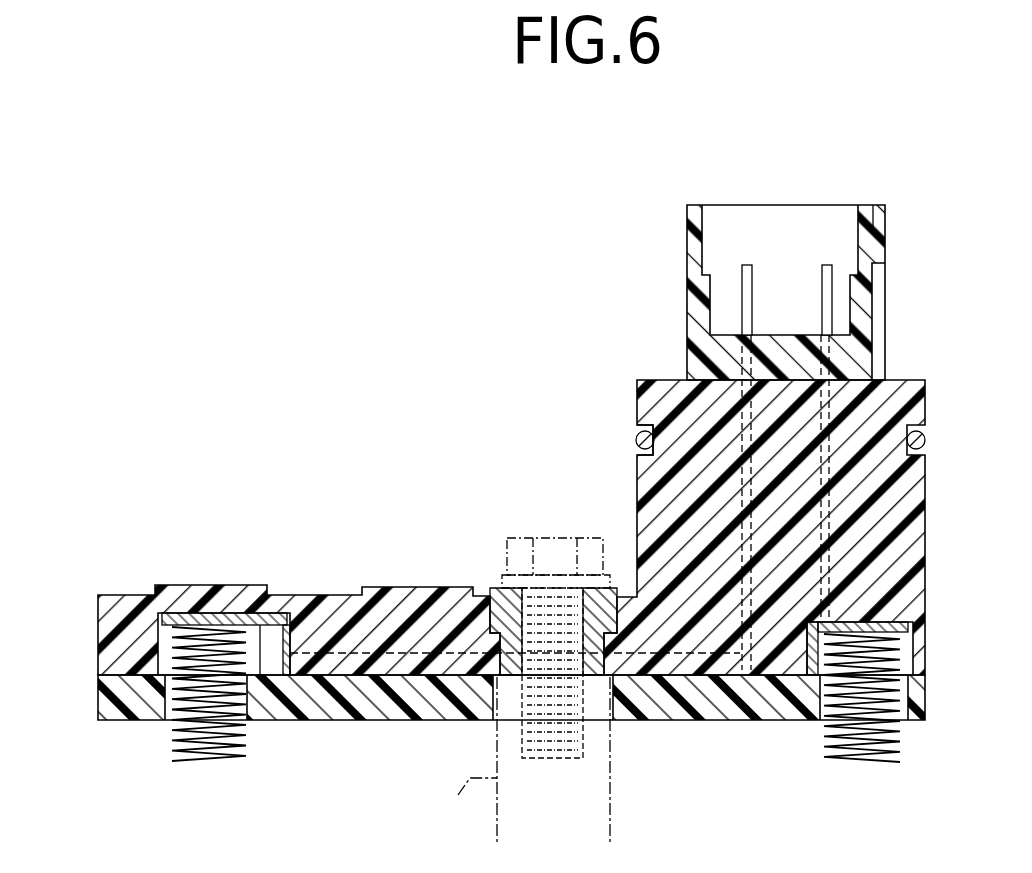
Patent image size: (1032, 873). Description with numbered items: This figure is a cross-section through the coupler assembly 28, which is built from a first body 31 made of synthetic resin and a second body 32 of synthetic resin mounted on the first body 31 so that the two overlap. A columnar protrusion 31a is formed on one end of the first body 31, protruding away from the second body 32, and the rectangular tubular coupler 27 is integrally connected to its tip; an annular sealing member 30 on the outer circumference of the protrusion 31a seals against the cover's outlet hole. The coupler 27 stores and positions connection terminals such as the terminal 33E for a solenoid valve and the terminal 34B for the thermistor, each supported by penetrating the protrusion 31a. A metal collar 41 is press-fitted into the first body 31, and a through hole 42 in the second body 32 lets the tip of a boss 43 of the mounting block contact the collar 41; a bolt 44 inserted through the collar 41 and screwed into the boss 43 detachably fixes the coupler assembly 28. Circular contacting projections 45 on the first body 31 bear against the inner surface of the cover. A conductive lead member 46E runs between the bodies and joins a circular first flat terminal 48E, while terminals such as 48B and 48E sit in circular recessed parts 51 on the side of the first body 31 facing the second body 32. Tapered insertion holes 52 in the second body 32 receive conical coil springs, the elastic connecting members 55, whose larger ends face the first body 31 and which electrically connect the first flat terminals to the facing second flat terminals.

The coupler 27 is at (695, 315).
The coupler assembly 28 is at (922, 565).
The annular sealing member 30 is at (921, 443).
The first body 31 is at (324, 616).
The protrusion 31a is at (645, 477).
The second body 32 is at (367, 700).
The connection terminal 33E is at (827, 265).
The connection terminal 34B is at (747, 265).
The collar 41 is at (500, 596).
The through hole 42 is at (598, 695).
The boss 43 is at (515, 761).
The bolt 44 is at (552, 538).
The contacting projection 45 is at (182, 588).
The lead member 46E is at (792, 663).
The first flat terminal 48B is at (238, 616).
The first flat terminal 48E is at (906, 621).
The recessed part 51 is at (163, 652).
The insertion hole 52 is at (176, 718).
The elastic connecting member 55 is at (215, 760).